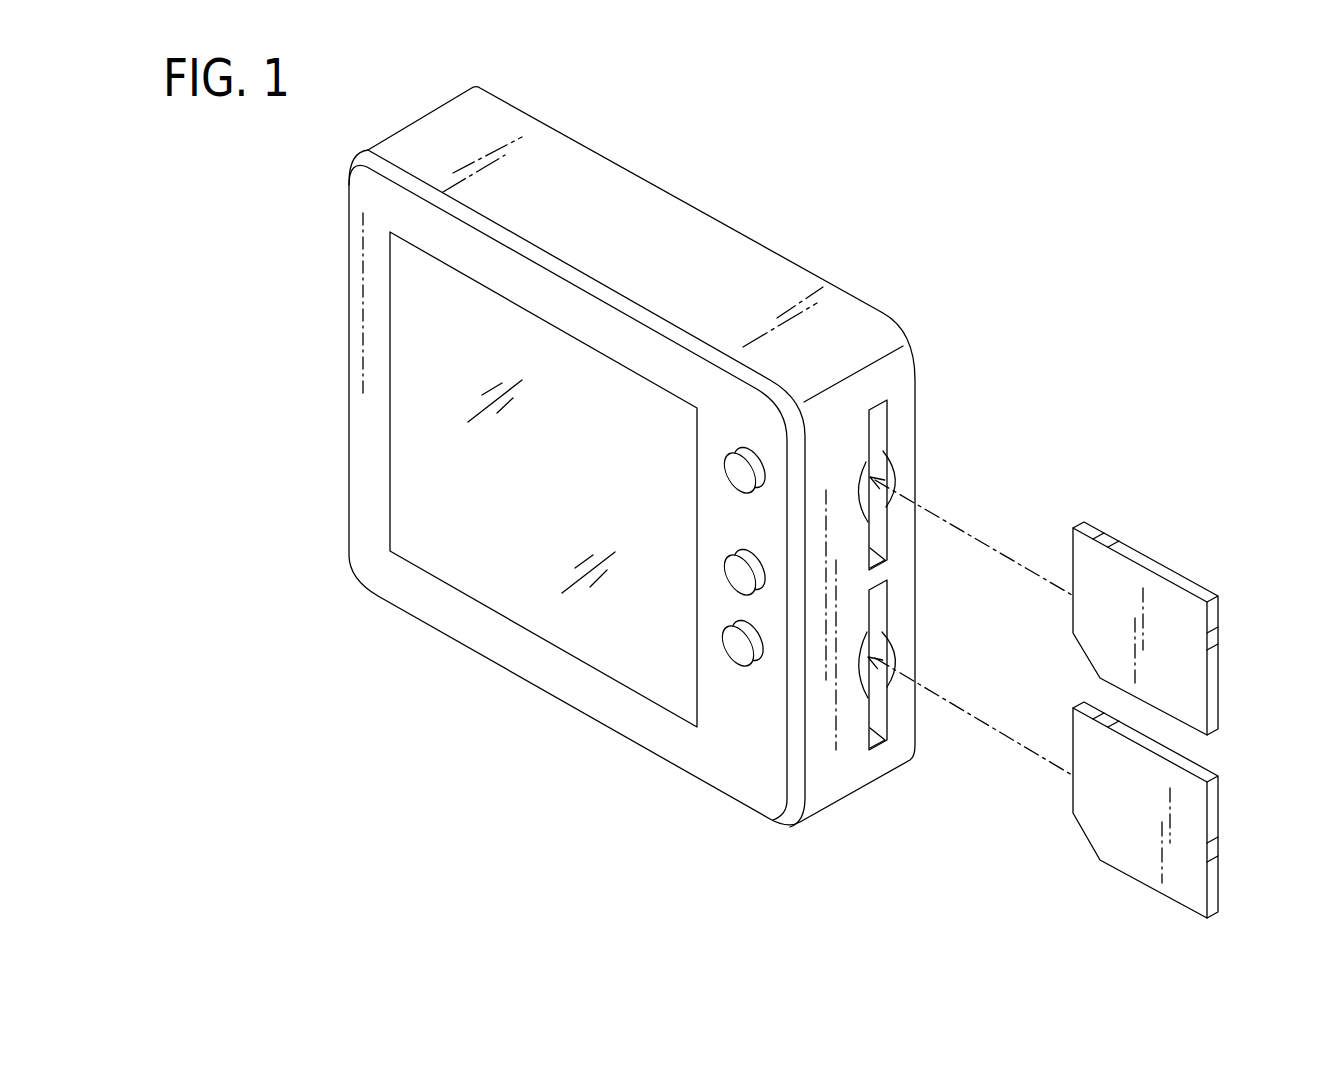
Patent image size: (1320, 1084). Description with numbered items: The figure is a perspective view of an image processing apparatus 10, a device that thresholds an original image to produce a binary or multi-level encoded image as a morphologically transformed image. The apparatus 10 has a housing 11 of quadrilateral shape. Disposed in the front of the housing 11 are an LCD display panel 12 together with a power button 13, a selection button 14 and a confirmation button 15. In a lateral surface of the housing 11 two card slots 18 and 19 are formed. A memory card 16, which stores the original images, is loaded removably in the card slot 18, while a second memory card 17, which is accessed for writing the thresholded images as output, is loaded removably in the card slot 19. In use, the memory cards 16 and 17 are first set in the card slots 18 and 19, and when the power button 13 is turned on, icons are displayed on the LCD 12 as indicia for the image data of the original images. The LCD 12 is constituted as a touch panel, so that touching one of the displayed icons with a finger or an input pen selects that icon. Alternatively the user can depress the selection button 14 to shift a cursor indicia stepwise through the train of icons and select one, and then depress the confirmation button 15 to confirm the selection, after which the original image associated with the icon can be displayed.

The image processing apparatus 10 is at (692, 203).
The housing 11 is at (753, 277).
The LCD display panel 12 is at (443, 450).
The power button 13 is at (740, 473).
The selection button 14 is at (735, 578).
The confirmation button 15 is at (740, 650).
The memory card 16 is at (1147, 553).
The memory card 17 is at (1095, 795).
The card slot 18 is at (880, 432).
The card slot 19 is at (877, 613).